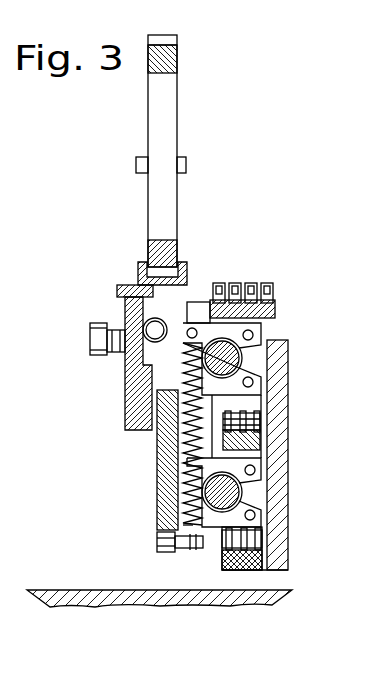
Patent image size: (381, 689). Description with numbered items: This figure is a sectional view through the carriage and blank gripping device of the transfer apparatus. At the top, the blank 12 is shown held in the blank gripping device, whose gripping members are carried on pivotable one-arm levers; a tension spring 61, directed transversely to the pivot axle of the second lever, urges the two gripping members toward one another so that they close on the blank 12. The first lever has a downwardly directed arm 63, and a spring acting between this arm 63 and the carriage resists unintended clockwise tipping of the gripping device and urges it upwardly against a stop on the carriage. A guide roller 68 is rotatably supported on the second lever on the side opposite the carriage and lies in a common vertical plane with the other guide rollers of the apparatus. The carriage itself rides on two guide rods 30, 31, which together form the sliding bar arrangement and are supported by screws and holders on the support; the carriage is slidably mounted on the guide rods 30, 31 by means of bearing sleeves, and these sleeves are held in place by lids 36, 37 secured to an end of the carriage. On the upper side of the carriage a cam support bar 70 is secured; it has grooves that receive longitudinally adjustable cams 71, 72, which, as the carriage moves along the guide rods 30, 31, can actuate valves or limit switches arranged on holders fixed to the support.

The blank 12 is at (170, 253).
The guide rod 30 is at (226, 358).
The guide rod 31 is at (230, 490).
The lid 36 is at (262, 328).
The lid 37 is at (257, 522).
The tension spring 61 is at (152, 328).
The downwardly directed arm 63 is at (197, 420).
The guide roller 68 is at (97, 337).
The cam support bar 70 is at (276, 311).
The cam 71 is at (249, 285).
The cam 72 is at (266, 282).